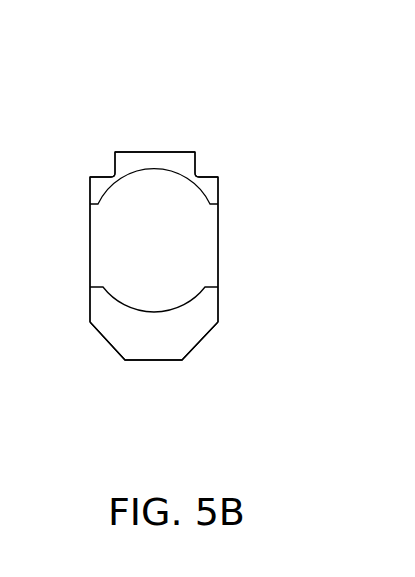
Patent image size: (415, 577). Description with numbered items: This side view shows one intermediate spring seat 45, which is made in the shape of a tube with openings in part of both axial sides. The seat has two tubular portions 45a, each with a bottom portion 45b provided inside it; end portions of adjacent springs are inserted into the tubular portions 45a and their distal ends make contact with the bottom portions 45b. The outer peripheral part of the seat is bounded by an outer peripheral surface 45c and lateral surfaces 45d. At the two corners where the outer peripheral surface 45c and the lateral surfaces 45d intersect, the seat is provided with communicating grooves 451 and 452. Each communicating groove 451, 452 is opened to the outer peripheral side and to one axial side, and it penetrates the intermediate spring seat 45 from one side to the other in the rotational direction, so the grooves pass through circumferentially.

The intermediate spring seat 45 is at (229, 116).
The communicating groove 451 is at (113, 170).
The communicating groove 452 is at (197, 158).
The tubular portion 45a is at (213, 187).
The bottom portion 45b is at (160, 252).
The outer peripheral surface 45c is at (160, 152).
The lateral surface 45d is at (218, 242).